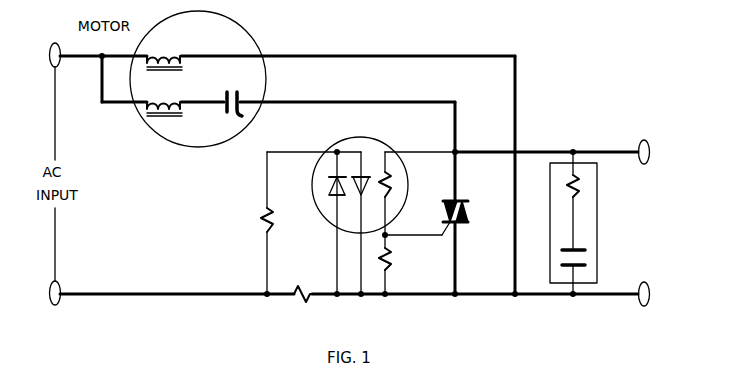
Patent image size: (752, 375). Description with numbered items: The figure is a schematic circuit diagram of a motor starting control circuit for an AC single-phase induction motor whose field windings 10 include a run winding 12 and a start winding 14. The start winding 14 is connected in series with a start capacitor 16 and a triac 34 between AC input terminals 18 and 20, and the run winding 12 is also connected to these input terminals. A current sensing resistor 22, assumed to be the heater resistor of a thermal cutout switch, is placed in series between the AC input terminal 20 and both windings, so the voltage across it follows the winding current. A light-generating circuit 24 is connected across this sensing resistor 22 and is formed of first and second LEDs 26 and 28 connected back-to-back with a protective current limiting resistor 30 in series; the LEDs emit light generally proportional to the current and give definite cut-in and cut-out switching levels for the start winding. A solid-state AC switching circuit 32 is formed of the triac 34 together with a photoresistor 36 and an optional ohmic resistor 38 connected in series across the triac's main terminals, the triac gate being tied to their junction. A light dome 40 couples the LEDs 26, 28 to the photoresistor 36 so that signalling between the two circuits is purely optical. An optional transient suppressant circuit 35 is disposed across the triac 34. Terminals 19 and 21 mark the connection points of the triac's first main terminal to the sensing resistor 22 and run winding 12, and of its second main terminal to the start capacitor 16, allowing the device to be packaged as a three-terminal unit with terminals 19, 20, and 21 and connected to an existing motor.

The field windings 10 is at (207, 36).
The run winding 12 is at (173, 50).
The start winding 14 is at (183, 116).
The start capacitor 16 is at (235, 118).
The AC input terminal 18 is at (39, 55).
The AC input terminal 20 is at (39, 293).
The terminal 21 is at (657, 152).
The terminal 19 is at (658, 294).
The current sensing resistor 22 is at (306, 286).
The light-generating circuit 24 is at (324, 134).
The first LED 26 is at (330, 188).
The second LED 28 is at (357, 169).
The current limiting resistor 30 is at (252, 220).
The solid-state AC switching circuit 32 is at (408, 215).
The triac 34 is at (471, 208).
The transient suppressant circuit 35 is at (588, 227).
The photoresistor 36 is at (394, 188).
The ohmic resistor 38 is at (391, 266).
The light dome 40 is at (325, 222).